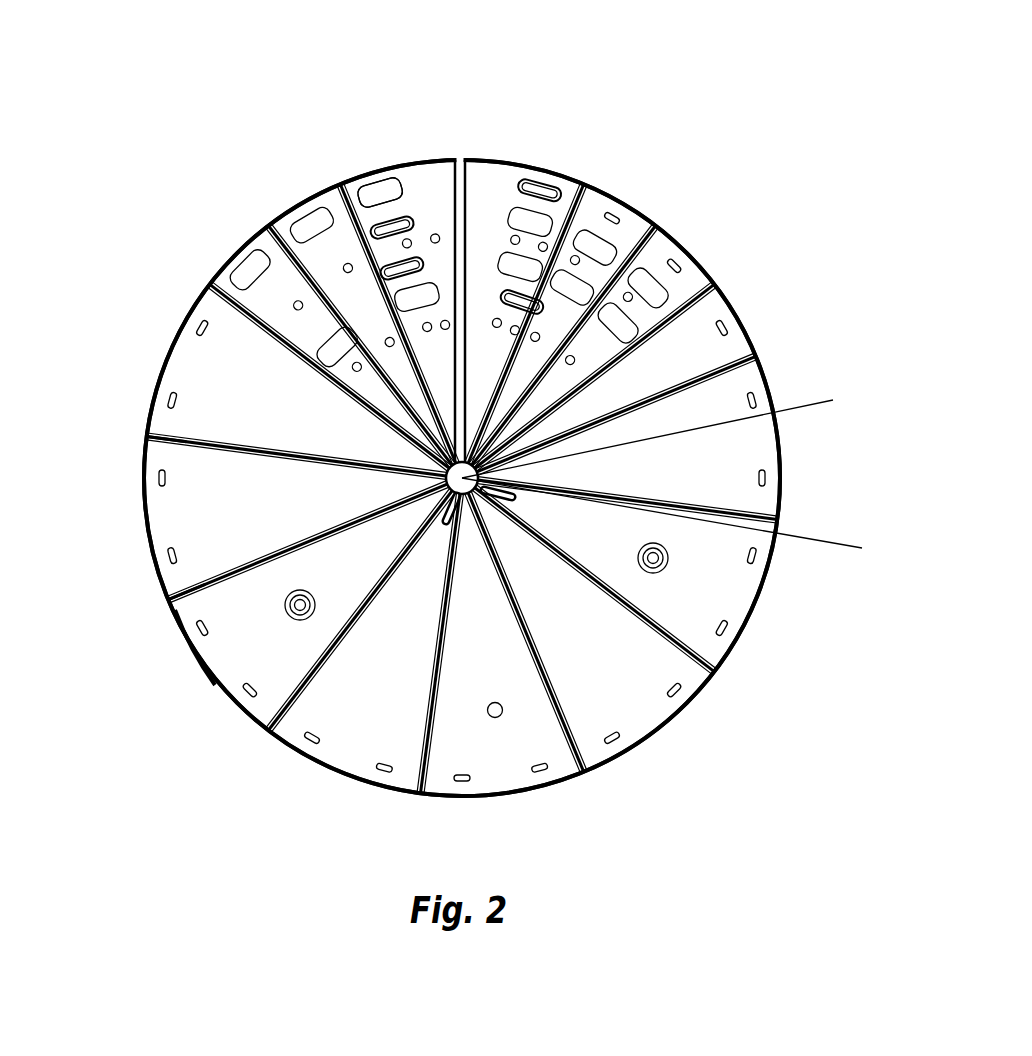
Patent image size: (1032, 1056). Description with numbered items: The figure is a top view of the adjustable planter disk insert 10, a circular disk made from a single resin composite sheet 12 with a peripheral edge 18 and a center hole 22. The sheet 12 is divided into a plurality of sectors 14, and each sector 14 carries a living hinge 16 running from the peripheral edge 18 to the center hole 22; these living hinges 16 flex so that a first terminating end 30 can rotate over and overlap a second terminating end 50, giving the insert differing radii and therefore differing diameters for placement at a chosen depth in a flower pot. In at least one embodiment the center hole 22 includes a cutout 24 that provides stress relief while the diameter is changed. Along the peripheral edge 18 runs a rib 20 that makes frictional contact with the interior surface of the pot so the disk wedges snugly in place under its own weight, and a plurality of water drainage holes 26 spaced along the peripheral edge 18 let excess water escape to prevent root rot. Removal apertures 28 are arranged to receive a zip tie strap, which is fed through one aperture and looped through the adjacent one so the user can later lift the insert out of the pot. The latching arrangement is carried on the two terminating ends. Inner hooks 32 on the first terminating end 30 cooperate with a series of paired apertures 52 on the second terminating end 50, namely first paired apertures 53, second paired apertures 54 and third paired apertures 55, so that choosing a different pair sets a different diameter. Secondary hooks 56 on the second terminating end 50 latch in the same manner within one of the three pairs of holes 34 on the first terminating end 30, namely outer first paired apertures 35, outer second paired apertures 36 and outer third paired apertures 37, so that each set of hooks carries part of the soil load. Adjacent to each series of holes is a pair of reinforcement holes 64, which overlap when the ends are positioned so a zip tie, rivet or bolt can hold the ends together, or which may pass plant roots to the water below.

The adjustable planter disk insert 10 is at (690, 108).
The resin composite sheet 12 is at (202, 355).
The sectors 14 is at (157, 432).
The living hinge 16 is at (200, 437).
The peripheral edge 18 is at (193, 648).
The rib 20 is at (223, 693).
The center hole 22 is at (664, 430).
The cutout 24 is at (682, 520).
The water drainage holes 26 is at (685, 268).
The removal apertures 28 is at (300, 620).
The first terminating end 30 is at (452, 193).
The hooks 32 is at (380, 223).
The paired apertures 34 is at (385, 182).
The outer first paired apertures 35 is at (382, 183).
The outer second paired apertures 36 is at (313, 217).
The outer third paired apertures 37 is at (250, 268).
The second terminating end 50 is at (467, 180).
The paired apertures 52 is at (552, 220).
The first paired apertures 53 is at (598, 250).
The second paired apertures 54 is at (648, 280).
The third paired apertures 55 is at (640, 310).
The secondary hooks 56 is at (547, 177).
The reinforcement holes 64 is at (515, 235).